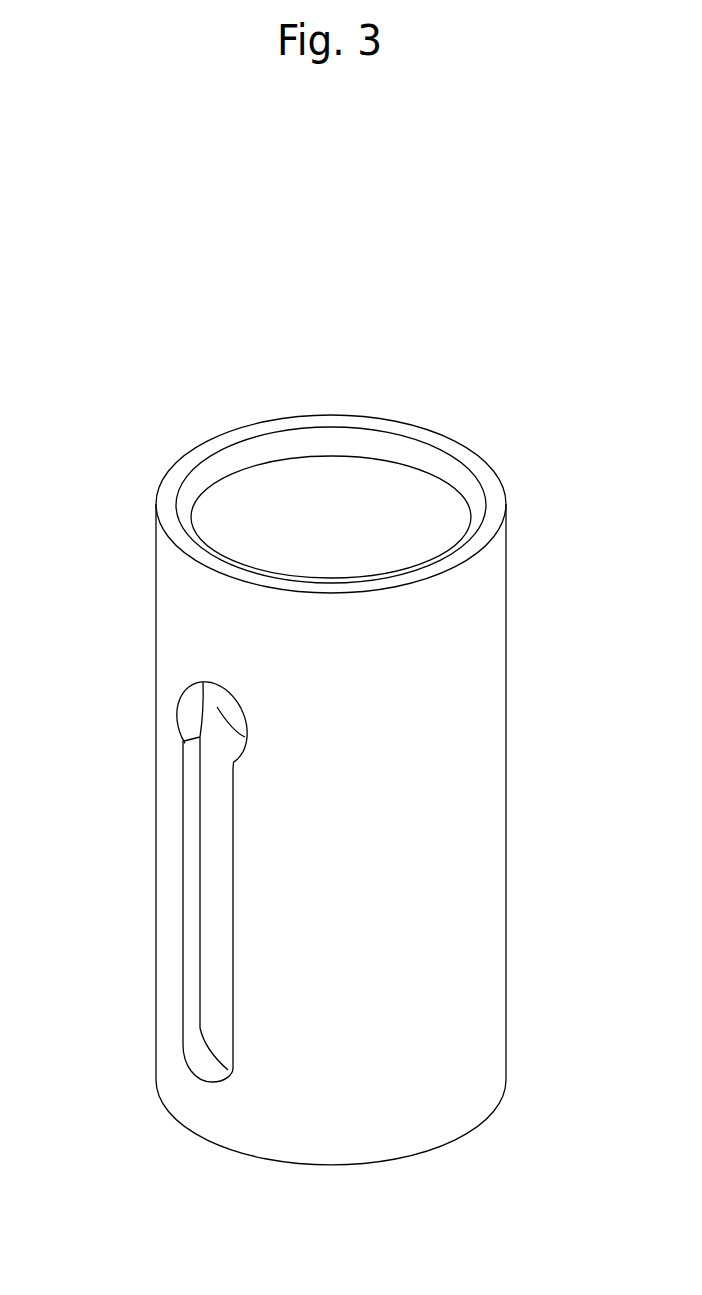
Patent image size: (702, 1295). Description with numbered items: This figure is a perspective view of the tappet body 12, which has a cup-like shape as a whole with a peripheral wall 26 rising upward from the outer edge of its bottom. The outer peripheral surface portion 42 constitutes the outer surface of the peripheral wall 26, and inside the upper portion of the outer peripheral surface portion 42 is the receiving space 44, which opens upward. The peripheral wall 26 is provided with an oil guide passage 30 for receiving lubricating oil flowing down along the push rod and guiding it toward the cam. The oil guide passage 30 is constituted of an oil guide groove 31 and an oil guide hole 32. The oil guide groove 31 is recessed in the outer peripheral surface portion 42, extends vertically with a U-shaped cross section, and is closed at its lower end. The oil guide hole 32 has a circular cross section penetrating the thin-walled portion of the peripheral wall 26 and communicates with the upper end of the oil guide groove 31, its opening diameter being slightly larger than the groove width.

The tappet body 12 is at (308, 754).
The peripheral wall 26 is at (497, 730).
The oil guide passage 30 is at (137, 882).
The oil guide groove 31 is at (208, 807).
The oil guide hole 32 is at (217, 707).
The outer peripheral surface portion 42 is at (493, 610).
The receiving space 44 is at (383, 533).